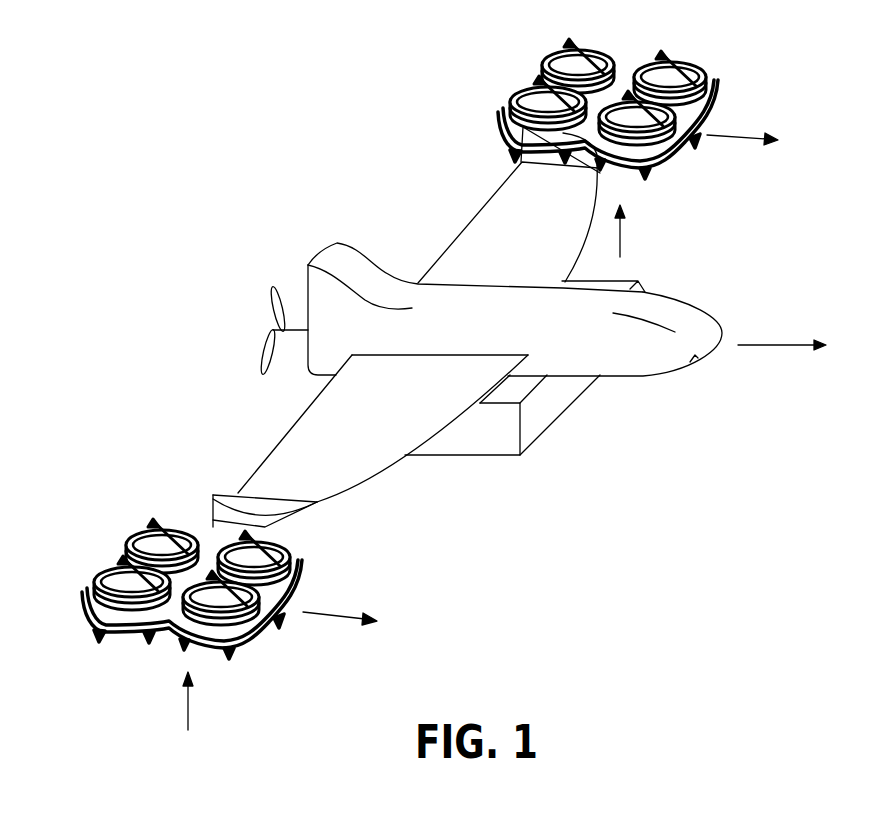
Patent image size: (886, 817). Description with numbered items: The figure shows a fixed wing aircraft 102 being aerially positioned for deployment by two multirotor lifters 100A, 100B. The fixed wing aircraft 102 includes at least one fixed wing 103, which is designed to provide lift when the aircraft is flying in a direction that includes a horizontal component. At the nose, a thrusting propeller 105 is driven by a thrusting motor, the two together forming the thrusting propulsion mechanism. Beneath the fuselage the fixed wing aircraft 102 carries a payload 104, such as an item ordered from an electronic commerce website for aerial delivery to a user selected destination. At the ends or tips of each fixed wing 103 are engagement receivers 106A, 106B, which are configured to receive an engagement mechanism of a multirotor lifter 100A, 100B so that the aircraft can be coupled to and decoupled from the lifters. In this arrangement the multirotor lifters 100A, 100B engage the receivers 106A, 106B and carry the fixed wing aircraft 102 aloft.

The multirotor lifter 100A is at (672, 62).
The multirotor lifter 100B is at (110, 567).
The fixed wing aircraft 102 is at (677, 312).
The fixed wing 103 is at (345, 462).
The payload 104 is at (542, 405).
The thrusting propeller 105 is at (272, 313).
The engagement receiver 106A is at (607, 165).
The engagement receiver 106B is at (215, 533).